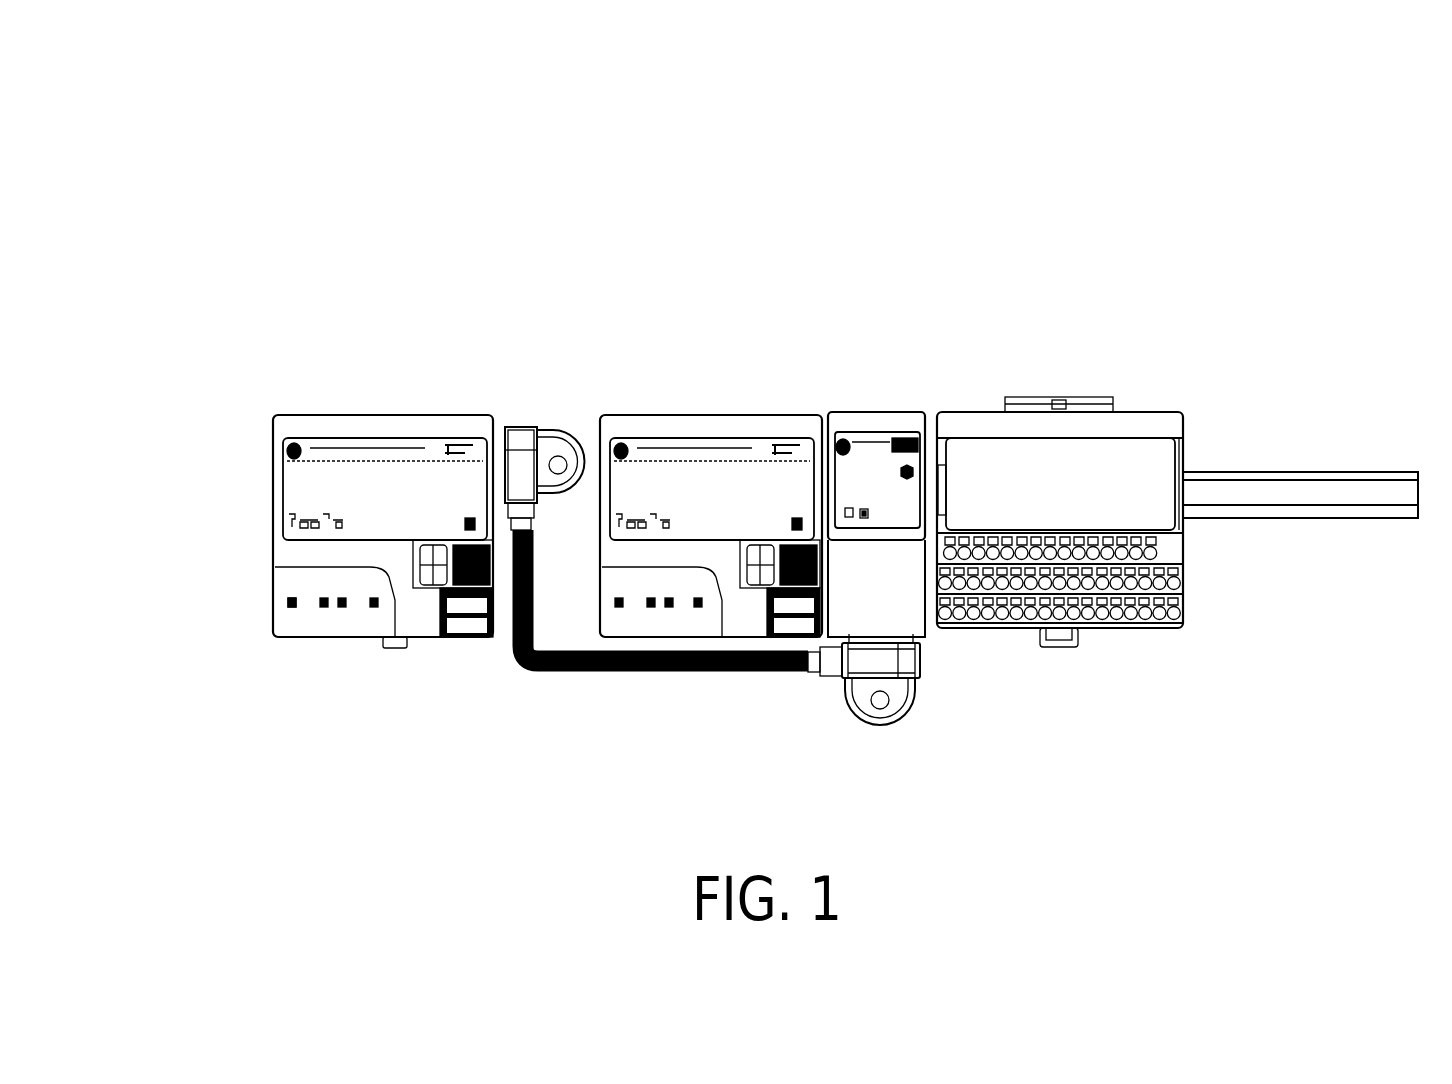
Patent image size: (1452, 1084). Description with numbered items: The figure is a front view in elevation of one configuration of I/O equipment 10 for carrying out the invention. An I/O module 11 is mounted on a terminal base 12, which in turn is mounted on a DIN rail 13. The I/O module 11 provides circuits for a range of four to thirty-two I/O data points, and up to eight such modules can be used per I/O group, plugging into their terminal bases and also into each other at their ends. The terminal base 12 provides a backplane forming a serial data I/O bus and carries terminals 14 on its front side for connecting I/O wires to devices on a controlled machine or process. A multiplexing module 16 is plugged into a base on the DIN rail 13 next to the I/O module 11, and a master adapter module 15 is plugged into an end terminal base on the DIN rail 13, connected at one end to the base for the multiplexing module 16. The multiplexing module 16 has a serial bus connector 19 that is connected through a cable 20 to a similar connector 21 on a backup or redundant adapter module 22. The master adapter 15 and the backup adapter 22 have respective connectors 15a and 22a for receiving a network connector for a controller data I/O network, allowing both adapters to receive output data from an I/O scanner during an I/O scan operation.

The I/O equipment 10 is at (1082, 242).
The I/O module 11 is at (1153, 437).
The terminal base 12 is at (1198, 597).
The DIN rail 13 is at (1245, 471).
The terminal 14 is at (1097, 602).
The master adapter module 15 is at (648, 418).
The connector 15a is at (698, 607).
The multiplexing module 16 is at (872, 410).
The serial bus connector 19 is at (900, 712).
The cable 20 is at (626, 672).
The connector 21 is at (557, 435).
The backup adapter module 22 is at (282, 448).
The connector 22a is at (298, 608).